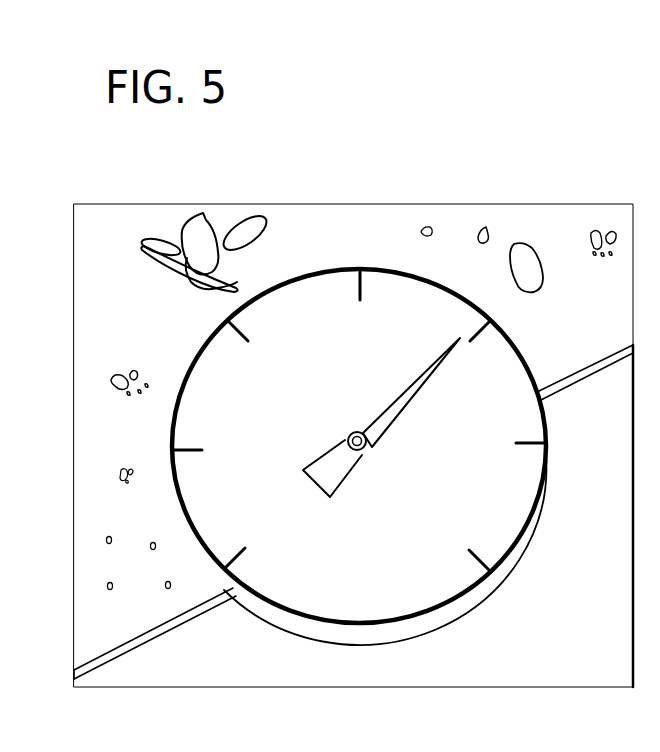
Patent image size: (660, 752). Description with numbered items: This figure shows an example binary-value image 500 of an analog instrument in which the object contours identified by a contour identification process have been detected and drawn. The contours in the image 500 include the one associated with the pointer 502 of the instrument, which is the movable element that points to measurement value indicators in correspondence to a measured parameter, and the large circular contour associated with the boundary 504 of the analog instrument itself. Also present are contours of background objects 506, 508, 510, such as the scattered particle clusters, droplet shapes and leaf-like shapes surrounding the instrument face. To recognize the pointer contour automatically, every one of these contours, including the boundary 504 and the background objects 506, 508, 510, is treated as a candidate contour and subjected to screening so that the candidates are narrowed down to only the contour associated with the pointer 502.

The gauge display environment 500 is at (566, 142).
The pointer contour 502 is at (384, 434).
The boundary contour of the analog instrument 504 is at (372, 270).
The background object contour 506 is at (136, 352).
The background object contour 508 is at (487, 216).
The background object contour 510 is at (148, 222).